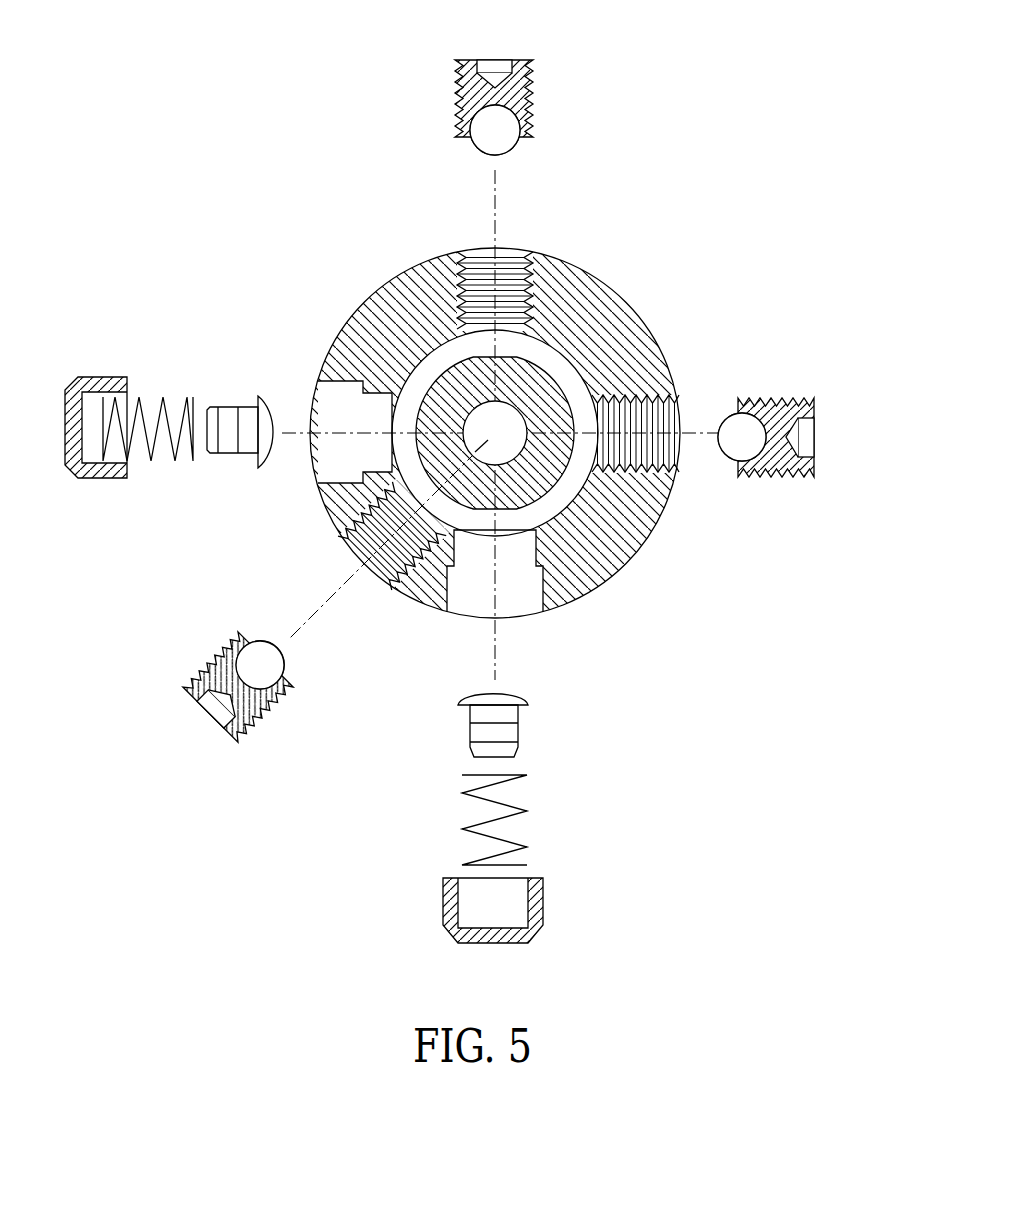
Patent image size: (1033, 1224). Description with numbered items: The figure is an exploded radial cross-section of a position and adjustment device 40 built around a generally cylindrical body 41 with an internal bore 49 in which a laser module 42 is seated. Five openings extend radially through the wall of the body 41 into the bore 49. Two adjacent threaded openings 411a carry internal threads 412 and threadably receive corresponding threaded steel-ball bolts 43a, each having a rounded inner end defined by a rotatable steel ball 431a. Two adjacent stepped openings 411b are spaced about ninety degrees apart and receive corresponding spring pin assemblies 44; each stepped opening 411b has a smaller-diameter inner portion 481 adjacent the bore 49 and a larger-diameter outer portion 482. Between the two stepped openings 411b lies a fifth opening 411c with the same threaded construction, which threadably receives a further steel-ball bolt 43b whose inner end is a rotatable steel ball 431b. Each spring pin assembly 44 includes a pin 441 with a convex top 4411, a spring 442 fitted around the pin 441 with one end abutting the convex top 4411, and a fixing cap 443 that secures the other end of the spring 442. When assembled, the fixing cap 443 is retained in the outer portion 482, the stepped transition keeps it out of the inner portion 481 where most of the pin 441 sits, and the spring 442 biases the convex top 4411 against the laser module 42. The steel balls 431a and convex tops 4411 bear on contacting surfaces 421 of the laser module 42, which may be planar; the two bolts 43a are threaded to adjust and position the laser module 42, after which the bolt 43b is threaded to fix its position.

The position and adjustment device 40 is at (300, 160).
The body 41 is at (343, 372).
The threaded openings 411a is at (518, 252).
The stepped openings 411b is at (328, 470).
The fifth opening 411c is at (357, 541).
The internal threads 412 is at (480, 253).
The laser module 42 is at (537, 387).
The contacting surfaces 421 is at (485, 356).
The threaded steel-ball bolts 43a is at (535, 112).
The steel ball 431a is at (507, 150).
The threaded steel-ball bolt 43b is at (260, 717).
The steel ball 431b is at (280, 658).
The spring pin assembly 44 is at (303, 333).
The pin 441 is at (228, 410).
The convex top 4411 is at (270, 420).
The spring 442 is at (162, 407).
The fixing cap 443 is at (110, 377).
The inner portion 481 is at (378, 392).
The outer portion 482 is at (338, 382).
The internal bore 49 is at (553, 500).